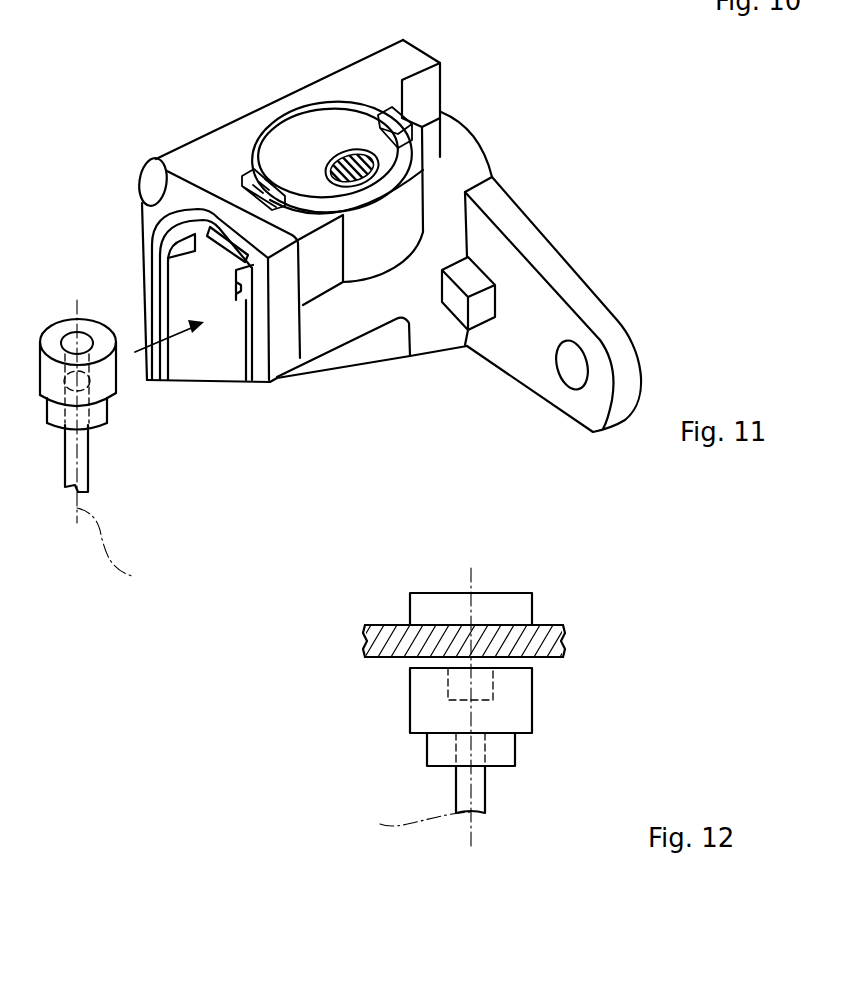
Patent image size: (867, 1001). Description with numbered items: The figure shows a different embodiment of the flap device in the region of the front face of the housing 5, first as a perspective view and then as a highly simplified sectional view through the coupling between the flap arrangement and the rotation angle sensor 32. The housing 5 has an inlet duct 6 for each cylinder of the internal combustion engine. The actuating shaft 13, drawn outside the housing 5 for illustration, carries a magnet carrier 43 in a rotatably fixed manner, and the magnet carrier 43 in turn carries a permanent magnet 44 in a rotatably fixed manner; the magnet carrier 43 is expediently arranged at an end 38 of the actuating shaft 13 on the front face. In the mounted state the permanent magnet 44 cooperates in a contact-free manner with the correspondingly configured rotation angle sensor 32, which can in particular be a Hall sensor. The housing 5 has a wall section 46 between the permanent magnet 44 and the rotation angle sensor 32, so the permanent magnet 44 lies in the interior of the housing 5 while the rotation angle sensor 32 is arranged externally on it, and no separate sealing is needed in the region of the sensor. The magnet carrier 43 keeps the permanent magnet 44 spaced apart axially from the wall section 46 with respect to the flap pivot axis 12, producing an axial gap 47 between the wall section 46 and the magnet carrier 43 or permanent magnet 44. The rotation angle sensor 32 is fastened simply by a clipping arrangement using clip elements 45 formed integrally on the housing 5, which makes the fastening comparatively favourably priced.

In FIG. 11, the housing 5 is at (270, 94).
In FIG. 12, the housing 5 is at (554, 620).
In FIG. 11, the inlet duct 6 is at (222, 363).
In FIG. 11, the flap pivot axis 12 is at (117, 551).
In FIG. 12, the flap pivot axis 12 is at (409, 819).
In FIG. 11, the actuating shaft 13 is at (96, 463).
In FIG. 12, the actuating shaft 13 is at (492, 790).
In FIG. 11, the rotation angle sensor 32 is at (298, 152).
In FIG. 12, the rotation angle sensor 32 is at (500, 586).
In FIG. 11, the end of the actuating shaft 38 is at (92, 393).
In FIG. 12, the end of the actuating shaft 38 is at (485, 750).
In FIG. 11, the magnet carrier 43 is at (89, 324).
In FIG. 12, the magnet carrier 43 is at (410, 700).
In FIG. 11, the permanent magnet 44 is at (70, 336).
In FIG. 12, the permanent magnet 44 is at (493, 682).
In FIG. 11, the clip elements 45 is at (250, 180).
In FIG. 12, the wall section 46 is at (378, 624).
In FIG. 12, the gap 47 is at (418, 662).